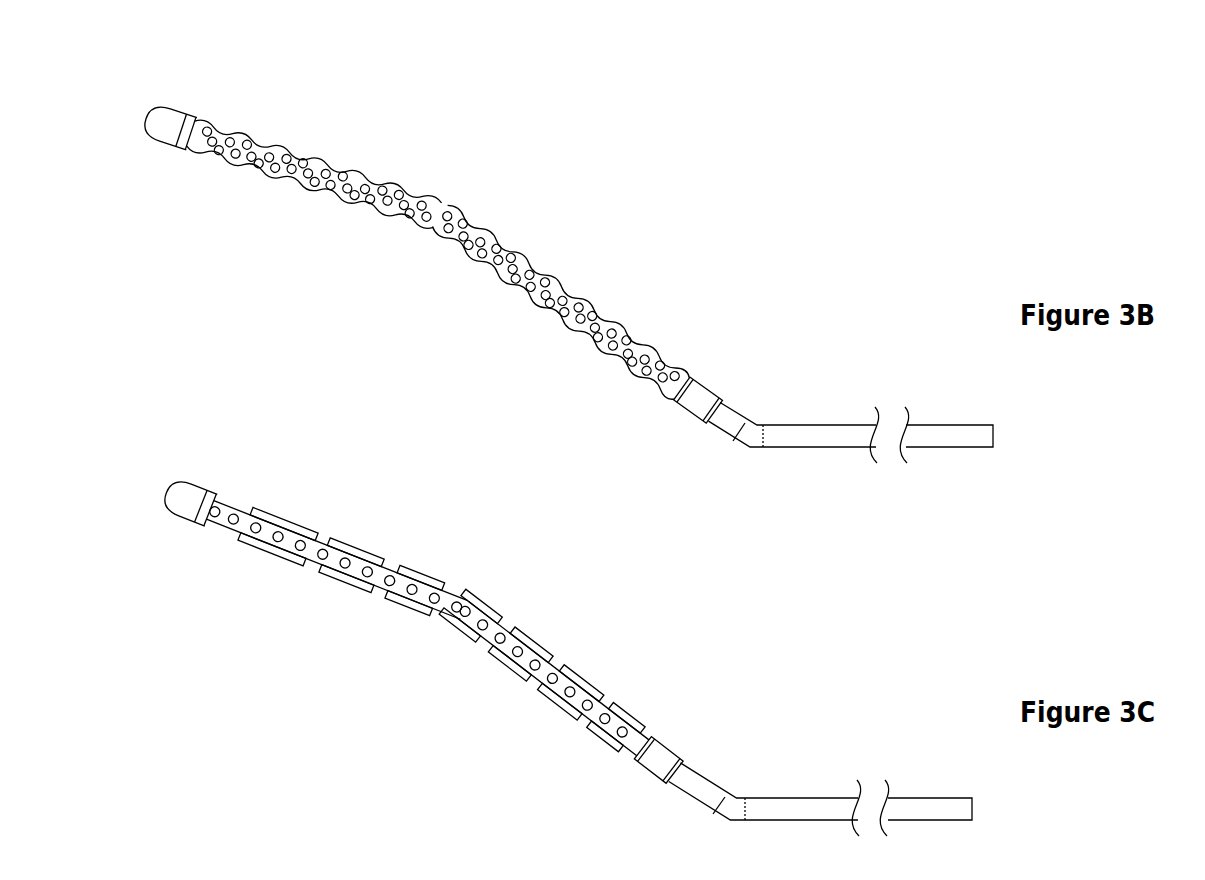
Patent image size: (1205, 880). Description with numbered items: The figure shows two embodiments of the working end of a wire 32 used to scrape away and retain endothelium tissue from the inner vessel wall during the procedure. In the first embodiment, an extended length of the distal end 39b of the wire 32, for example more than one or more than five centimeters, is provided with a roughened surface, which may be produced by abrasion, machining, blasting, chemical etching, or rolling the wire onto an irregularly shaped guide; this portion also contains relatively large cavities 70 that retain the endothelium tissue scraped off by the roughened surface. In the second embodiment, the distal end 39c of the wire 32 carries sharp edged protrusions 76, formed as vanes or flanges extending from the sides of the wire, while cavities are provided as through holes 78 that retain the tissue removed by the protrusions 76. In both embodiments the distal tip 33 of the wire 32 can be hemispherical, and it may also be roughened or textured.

In FIG. 3B, the distal tip 33 is at (151, 106).
In FIG. 3C, the distal tip 33 is at (168, 488).
In FIG. 3B, the distal end 39b is at (790, 417).
In FIG. 3B, the cavities 70 is at (278, 172).
In FIG. 3B, the wire 32 is at (732, 408).
In FIG. 3C, the wire 32 is at (704, 777).
In FIG. 3C, the distal end 39c is at (765, 793).
In FIG. 3C, the sharp edged protrusions 76 is at (283, 521).
In FIG. 3C, the through holes 78 is at (292, 555).